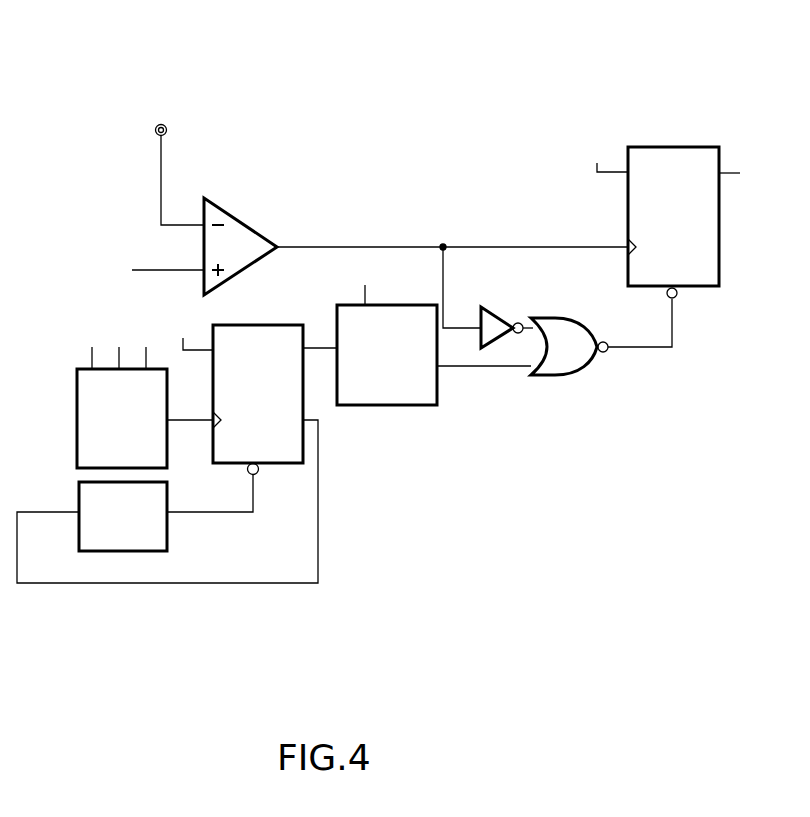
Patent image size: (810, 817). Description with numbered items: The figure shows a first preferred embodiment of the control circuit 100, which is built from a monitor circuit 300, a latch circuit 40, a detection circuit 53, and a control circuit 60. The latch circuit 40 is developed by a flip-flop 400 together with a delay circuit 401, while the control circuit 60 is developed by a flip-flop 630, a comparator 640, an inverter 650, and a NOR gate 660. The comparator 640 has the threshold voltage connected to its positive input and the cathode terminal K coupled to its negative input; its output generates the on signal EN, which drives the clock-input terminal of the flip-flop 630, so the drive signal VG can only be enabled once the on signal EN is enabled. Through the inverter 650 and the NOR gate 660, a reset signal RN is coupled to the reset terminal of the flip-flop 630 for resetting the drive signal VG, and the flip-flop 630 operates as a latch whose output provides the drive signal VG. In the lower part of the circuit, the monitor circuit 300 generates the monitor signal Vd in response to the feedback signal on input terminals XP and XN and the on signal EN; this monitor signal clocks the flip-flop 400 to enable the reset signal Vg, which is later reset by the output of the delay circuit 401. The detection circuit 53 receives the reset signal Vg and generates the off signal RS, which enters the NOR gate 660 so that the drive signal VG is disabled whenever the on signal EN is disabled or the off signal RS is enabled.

The control circuit 100 is at (710, 44).
The comparator 640 is at (250, 222).
The control circuit 60 is at (515, 212).
The inverter 650 is at (505, 318).
The NOR gate 660 is at (601, 337).
The detection circuit 53 is at (420, 406).
The flip-flop 400 is at (263, 322).
The latch circuit 40 is at (263, 478).
The monitor circuit 300 is at (170, 450).
The delay circuit 401 is at (170, 532).
The flip-flop 630 is at (668, 146).